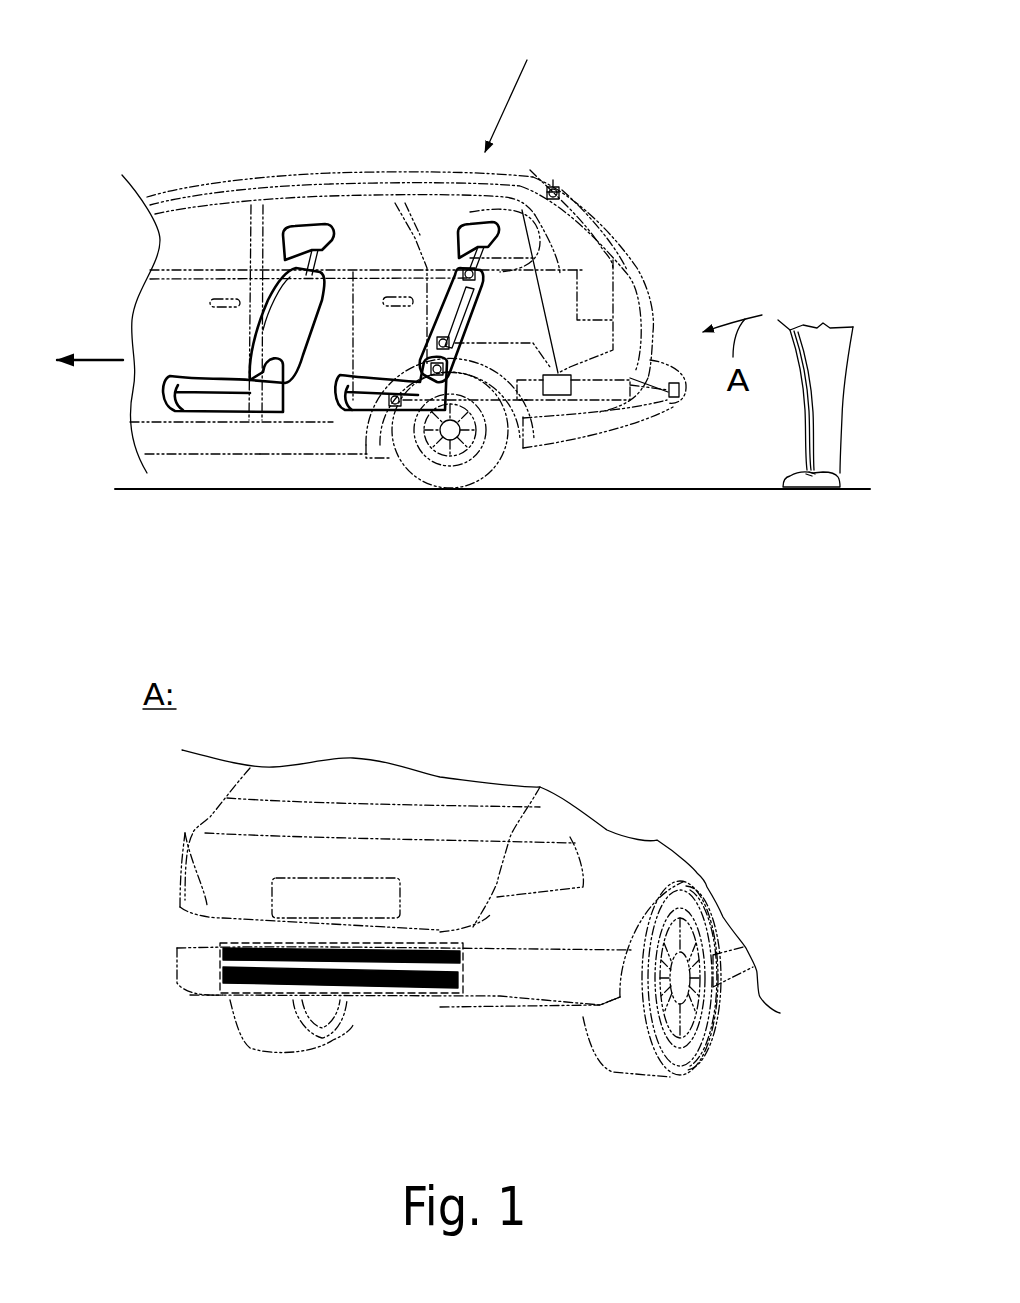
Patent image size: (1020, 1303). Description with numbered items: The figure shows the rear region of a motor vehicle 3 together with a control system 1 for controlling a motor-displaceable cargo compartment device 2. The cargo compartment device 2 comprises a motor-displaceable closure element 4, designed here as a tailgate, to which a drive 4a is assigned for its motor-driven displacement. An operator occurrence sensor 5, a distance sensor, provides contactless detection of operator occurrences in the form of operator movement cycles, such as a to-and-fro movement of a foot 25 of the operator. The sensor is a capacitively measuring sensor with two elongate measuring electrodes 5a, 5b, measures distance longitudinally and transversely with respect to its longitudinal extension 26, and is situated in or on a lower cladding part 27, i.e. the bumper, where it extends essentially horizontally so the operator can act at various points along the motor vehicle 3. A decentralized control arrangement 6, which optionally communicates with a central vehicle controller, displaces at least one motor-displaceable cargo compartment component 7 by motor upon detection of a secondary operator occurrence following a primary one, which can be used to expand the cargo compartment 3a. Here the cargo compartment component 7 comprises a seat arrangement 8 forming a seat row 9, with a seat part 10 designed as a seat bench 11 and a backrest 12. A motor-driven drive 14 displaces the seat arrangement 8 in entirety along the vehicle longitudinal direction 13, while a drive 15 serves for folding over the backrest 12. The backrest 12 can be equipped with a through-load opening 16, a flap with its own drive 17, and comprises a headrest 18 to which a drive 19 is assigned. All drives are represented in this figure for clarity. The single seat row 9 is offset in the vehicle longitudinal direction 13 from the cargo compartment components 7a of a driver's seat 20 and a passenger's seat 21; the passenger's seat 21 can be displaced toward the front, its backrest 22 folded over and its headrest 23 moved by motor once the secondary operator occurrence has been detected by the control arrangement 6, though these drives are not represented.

The control system 1 is at (525, 150).
The cargo compartment device 2 is at (678, 233).
The motor vehicle 3 is at (335, 170).
The cargo compartment 3a is at (579, 307).
The closure element 4 is at (650, 300).
The drive 4a is at (565, 196).
The operator occurrence sensor 5 is at (677, 398).
The measuring electrode 5a is at (465, 975).
The measuring electrode 5b is at (460, 995).
The control arrangement 6 is at (560, 395).
The cargo compartment component 7 is at (330, 424).
The seat arrangement 8 is at (202, 503).
The seat row 9 is at (315, 503).
The cargo compartment components 7a is at (180, 432).
The seat part 10 is at (417, 311).
The seat bench 11 is at (473, 240).
The backrest 12 is at (420, 275).
The vehicle longitudinal direction 13 is at (93, 363).
The motor-driven drive 14 is at (395, 407).
The drive 15 is at (438, 377).
The through-load opening 16 is at (532, 180).
The drive 17 is at (468, 338).
The headrest 18 is at (458, 233).
The drive 19 is at (492, 277).
The driver's seat 20 is at (236, 246).
The passenger's seat 21 is at (280, 297).
The backrest 22 is at (257, 327).
The headrest 23 is at (300, 312).
The foot 25 is at (790, 492).
The longitudinal extension 26 is at (220, 962).
The lower cladding part 27 is at (643, 420).